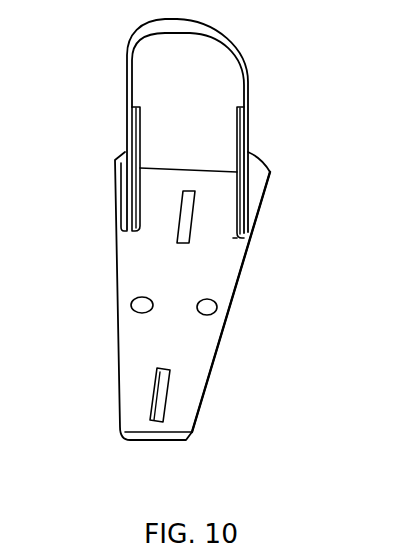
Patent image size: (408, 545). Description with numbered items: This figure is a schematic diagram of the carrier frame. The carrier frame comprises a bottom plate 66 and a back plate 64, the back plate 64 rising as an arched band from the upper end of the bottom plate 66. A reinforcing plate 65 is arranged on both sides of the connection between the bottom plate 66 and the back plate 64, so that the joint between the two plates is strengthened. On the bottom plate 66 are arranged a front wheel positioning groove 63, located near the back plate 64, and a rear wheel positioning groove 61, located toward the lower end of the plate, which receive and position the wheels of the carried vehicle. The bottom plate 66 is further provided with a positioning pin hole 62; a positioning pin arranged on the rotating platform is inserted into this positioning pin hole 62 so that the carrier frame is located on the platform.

The rear wheel positioning groove 61 is at (160, 371).
The positioning pin hole 62 is at (213, 302).
The front wheel positioning groove 63 is at (186, 192).
The back plate 64 is at (240, 43).
The reinforcing plate 65 is at (129, 127).
The bottom plate 66 is at (137, 273).